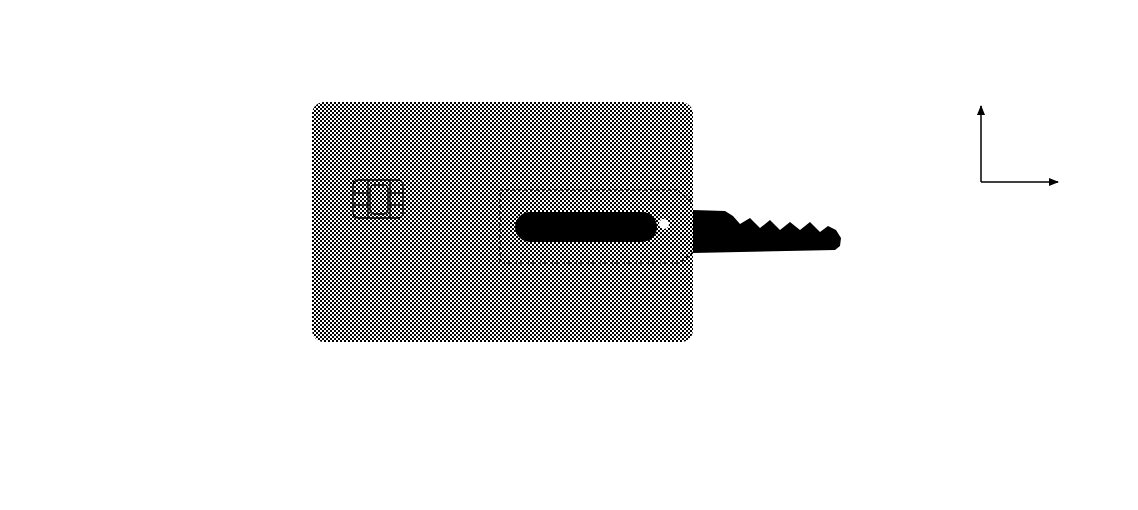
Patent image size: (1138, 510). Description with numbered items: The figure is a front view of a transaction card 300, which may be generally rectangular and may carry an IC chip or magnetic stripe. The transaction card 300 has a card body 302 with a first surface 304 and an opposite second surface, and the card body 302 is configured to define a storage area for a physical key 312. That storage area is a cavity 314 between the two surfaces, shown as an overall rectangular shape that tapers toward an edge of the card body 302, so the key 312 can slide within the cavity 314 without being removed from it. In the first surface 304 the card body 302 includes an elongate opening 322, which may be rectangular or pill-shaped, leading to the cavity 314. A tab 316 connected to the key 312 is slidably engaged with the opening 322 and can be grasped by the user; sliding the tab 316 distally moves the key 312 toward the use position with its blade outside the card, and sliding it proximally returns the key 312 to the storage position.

The transaction card 300 is at (158, 58).
The card body 302 is at (263, 143).
The first surface 304 is at (400, 313).
The physical key 312 is at (828, 232).
The cavity 314 is at (592, 190).
The tab 316 is at (664, 232).
The elongate opening 322 is at (561, 228).